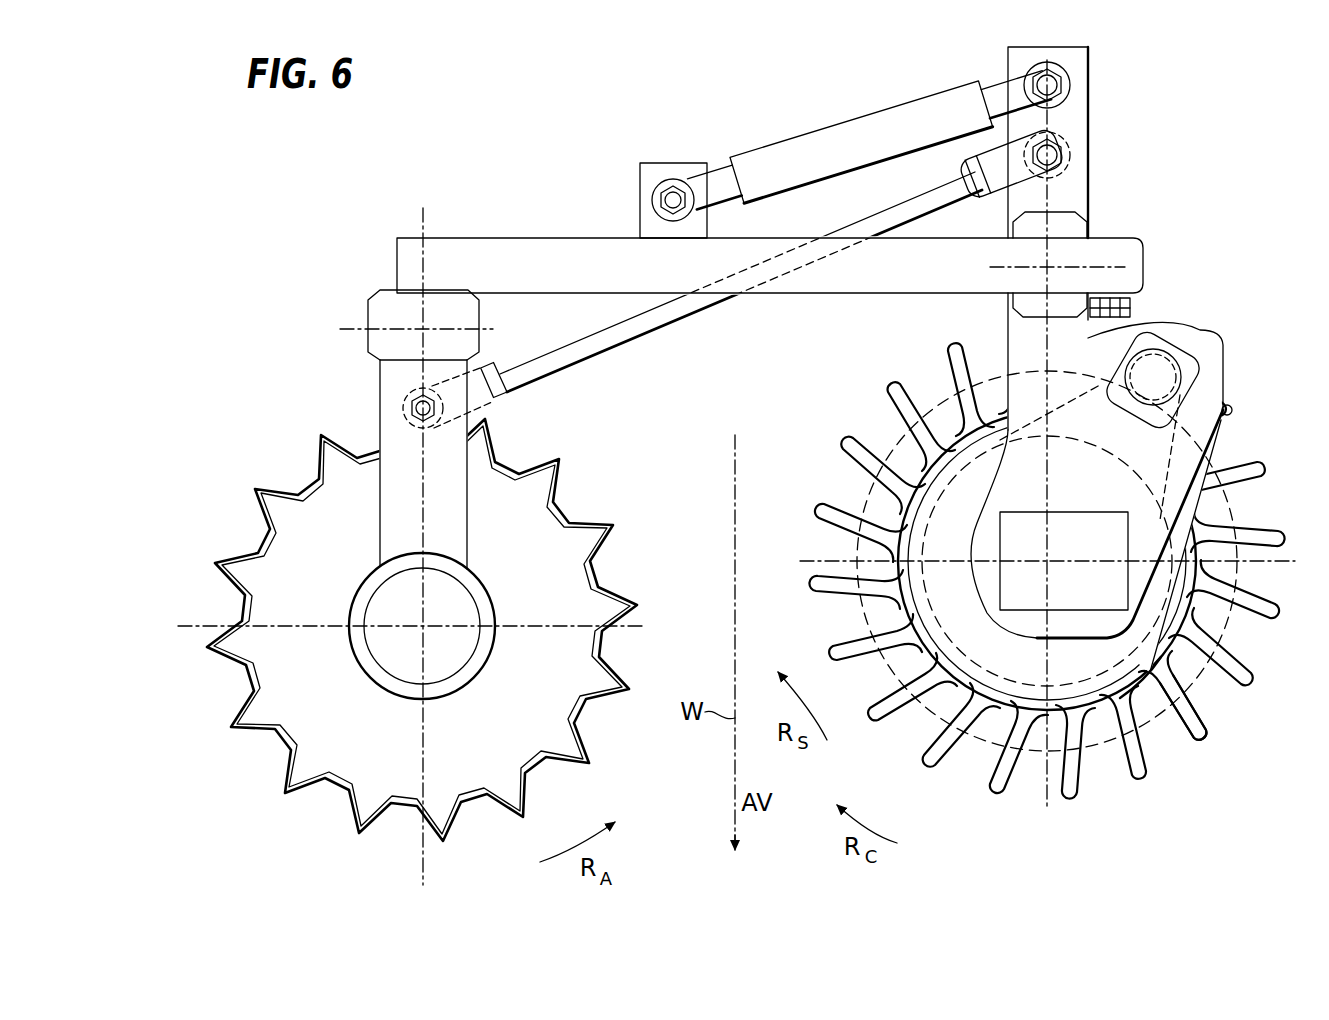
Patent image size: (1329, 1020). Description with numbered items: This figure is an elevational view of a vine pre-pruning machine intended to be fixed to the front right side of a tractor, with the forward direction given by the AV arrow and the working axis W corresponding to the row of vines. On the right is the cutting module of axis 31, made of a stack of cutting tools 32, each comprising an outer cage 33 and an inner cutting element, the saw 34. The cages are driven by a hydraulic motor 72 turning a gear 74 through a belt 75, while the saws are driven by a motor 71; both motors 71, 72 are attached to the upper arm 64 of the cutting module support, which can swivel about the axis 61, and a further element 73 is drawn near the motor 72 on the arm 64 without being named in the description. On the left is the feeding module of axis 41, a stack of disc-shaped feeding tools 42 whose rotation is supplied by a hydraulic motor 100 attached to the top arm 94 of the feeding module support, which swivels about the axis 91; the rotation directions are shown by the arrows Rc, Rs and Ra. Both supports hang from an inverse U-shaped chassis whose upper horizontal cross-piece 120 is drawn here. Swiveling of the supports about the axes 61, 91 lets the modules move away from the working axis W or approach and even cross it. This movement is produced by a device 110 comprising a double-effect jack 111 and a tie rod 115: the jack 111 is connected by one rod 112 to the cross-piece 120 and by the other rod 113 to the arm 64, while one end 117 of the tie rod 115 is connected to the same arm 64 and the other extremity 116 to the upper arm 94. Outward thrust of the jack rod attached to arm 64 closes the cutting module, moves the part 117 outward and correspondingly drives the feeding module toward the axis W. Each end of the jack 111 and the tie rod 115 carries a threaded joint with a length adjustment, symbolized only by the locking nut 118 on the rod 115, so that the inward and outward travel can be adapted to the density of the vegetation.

The axis 31 is at (1047, 476).
The cutting tools 32 is at (1087, 800).
The cage 33 is at (1153, 770).
The saw 34 is at (1153, 733).
The axis 41 is at (420, 627).
The feeding tools 42 is at (247, 717).
The axis 61 is at (1043, 267).
The arm 64 is at (1105, 325).
The motor 71 is at (1103, 540).
The hydraulic motor 72 is at (1183, 343).
The pivot bolt 73 is at (1177, 383).
The gear 74 is at (1167, 510).
The belt 75 is at (1183, 453).
The axis 91 is at (423, 325).
The top arm 94 is at (387, 390).
The hydraulic motor 100 is at (397, 600).
The device 110 is at (800, 226).
The double-effect jack 111 is at (893, 127).
The rod 112 is at (700, 187).
The rod 113 is at (1000, 92).
The tie rod 115 is at (598, 340).
The extremity 116 is at (473, 393).
The end 117 is at (1017, 180).
The locking nut 118 is at (1037, 128).
The cross-piece 120 is at (408, 265).